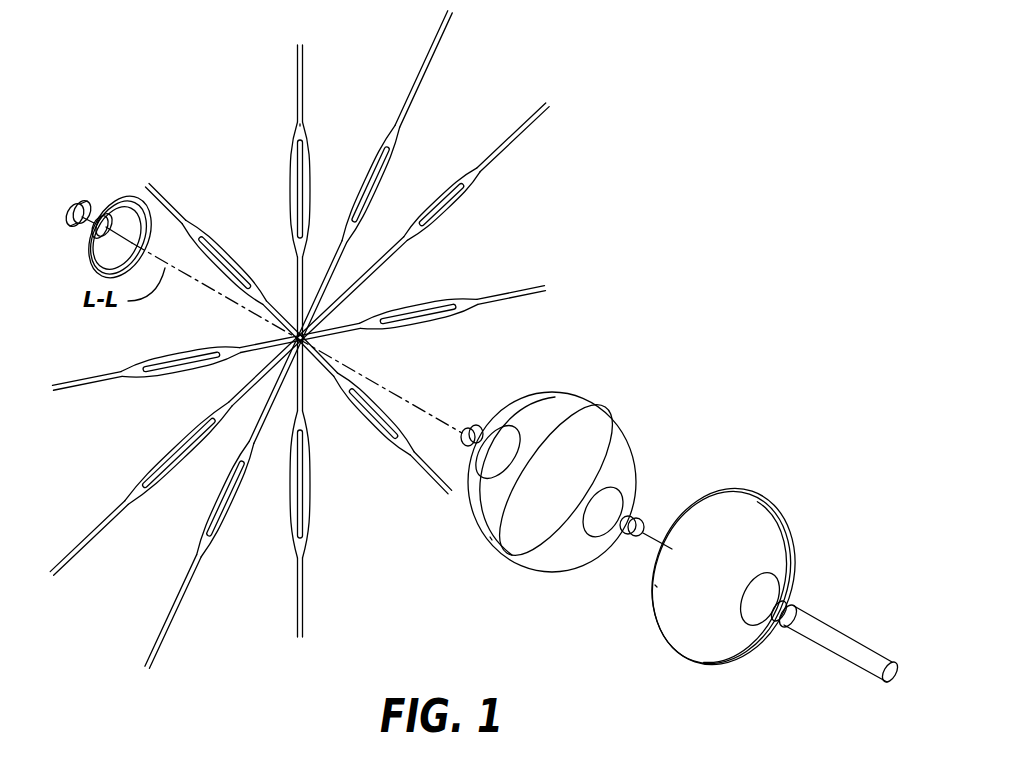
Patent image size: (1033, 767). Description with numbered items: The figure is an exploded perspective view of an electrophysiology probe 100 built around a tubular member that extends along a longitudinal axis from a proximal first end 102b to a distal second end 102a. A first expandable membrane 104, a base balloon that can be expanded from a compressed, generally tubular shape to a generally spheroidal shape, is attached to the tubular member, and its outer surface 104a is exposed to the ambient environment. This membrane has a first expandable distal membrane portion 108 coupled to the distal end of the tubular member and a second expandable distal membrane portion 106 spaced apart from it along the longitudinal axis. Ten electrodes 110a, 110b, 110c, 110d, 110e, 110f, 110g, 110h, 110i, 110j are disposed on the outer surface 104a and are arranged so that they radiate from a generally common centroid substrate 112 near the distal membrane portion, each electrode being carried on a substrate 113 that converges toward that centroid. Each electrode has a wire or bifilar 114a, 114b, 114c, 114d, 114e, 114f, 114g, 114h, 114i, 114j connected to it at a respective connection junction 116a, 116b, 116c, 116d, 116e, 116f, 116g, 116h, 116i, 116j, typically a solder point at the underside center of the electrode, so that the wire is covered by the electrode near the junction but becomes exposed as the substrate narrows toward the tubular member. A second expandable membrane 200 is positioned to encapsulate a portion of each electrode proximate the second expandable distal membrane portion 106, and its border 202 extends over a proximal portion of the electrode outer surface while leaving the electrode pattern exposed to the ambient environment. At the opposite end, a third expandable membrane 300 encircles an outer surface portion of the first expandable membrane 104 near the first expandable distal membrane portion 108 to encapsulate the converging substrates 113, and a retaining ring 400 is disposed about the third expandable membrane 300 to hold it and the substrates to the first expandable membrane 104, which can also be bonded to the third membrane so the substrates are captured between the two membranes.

The electrophysiology probe 100 is at (458, 384).
The second (distal) end of tubular member 102a is at (791, 601).
The first (proximal) end of tubular member 102b is at (855, 672).
The first expandable membrane 104 is at (598, 395).
The outer surface of first expandable membrane 104a is at (490, 537).
The second expandable distal membrane portion 106 is at (636, 515).
The first expandable distal membrane portion 108 is at (476, 424).
The electrode 110a is at (291, 184).
The electrode 110b is at (366, 175).
The electrode 110c is at (440, 206).
The electrode 110d is at (414, 305).
The electrode 110e is at (380, 442).
The electrode 110f is at (289, 499).
The electrode 110g is at (199, 528).
The electrode 110h is at (144, 472).
The electrode 110i is at (162, 356).
The electrode 110j is at (228, 249).
The centroid substrate 112 is at (316, 341).
The substrate 113 is at (391, 128).
The wire (bifilar) 114a is at (296, 80).
The wire (bifilar) 114b is at (440, 48).
The wire (bifilar) 114c is at (487, 156).
The wire (bifilar) 114d is at (500, 301).
The wire (bifilar) 114e is at (424, 466).
The wire (bifilar) 114f is at (296, 601).
The wire (bifilar) 114g is at (169, 638).
The wire (bifilar) 114h is at (83, 539).
The wire (bifilar) 114i is at (107, 384).
The wire (bifilar) 114j is at (185, 207).
The connection junction 116a is at (306, 213).
The connection junction 116b is at (370, 193).
The connection junction 116c is at (430, 228).
The connection junction 116d is at (424, 323).
The connection junction 116e is at (360, 412).
The connection junction 116f is at (306, 483).
The connection junction 116g is at (221, 489).
The connection junction 116h is at (186, 447).
The connection junction 116i is at (181, 352).
The connection junction 116j is at (243, 262).
The second expandable membrane 200 is at (768, 487).
The border of second expandable membrane 202 is at (655, 585).
The third expandable membrane 300 is at (117, 203).
The retaining ring 400 is at (79, 203).